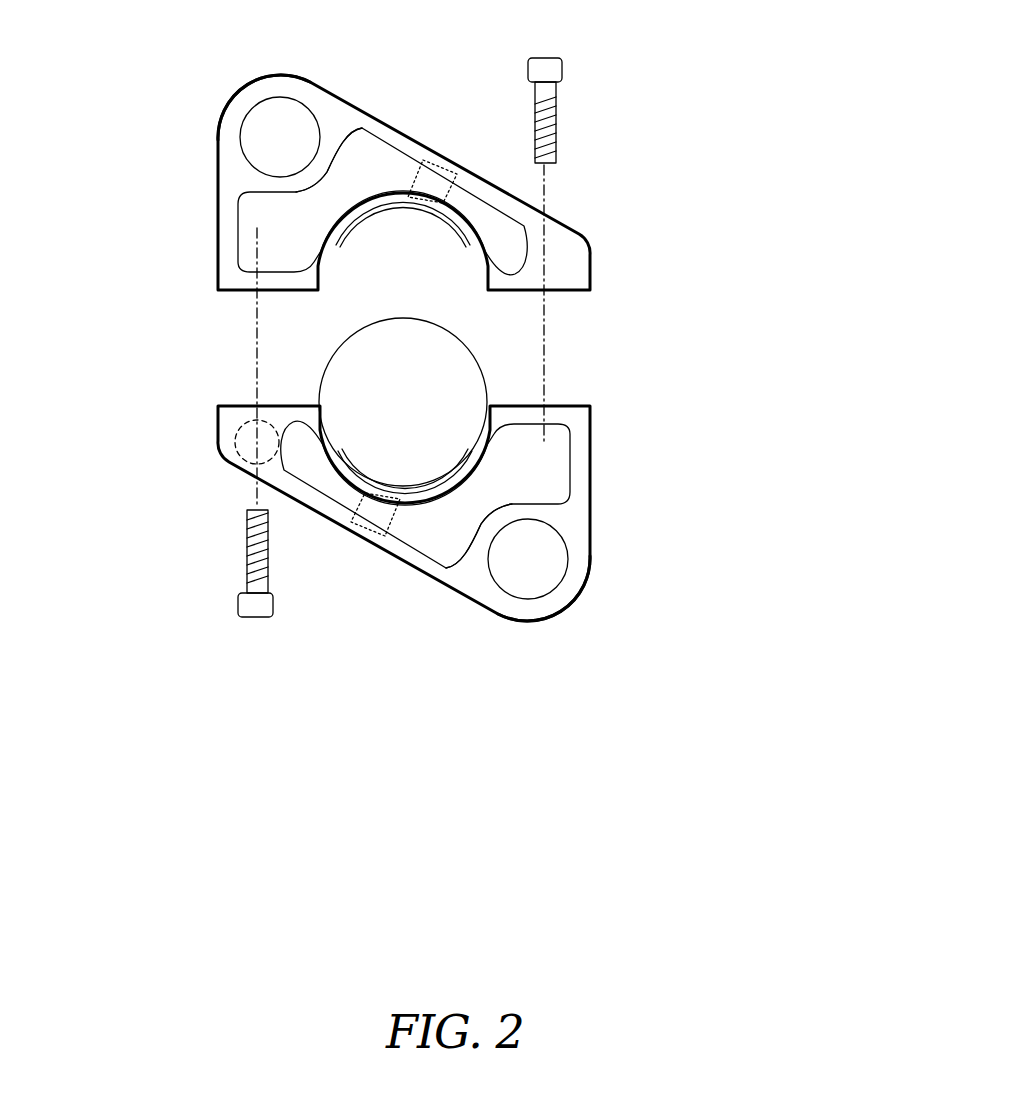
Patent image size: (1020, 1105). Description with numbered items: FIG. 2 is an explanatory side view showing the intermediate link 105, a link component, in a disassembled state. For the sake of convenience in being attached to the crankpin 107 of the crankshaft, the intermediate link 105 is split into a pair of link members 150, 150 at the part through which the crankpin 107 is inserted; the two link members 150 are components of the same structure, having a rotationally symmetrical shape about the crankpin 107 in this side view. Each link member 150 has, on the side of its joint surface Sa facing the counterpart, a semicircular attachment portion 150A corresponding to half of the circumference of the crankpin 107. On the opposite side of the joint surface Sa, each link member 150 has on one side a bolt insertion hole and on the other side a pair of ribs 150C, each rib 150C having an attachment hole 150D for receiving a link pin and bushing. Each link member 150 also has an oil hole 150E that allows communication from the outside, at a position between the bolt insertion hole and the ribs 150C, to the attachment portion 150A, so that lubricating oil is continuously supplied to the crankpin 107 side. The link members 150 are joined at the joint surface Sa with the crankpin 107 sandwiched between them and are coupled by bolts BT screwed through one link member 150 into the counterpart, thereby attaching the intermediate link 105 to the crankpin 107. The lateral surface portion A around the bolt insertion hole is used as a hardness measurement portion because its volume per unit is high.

The intermediate link 105 is at (525, 348).
The link member 150 is at (590, 268).
The attachment portion 150A is at (343, 233).
The rib 150C is at (276, 80).
The attachment hole 150D is at (240, 134).
The oil hole 150E is at (458, 192).
The joint surface Sa is at (283, 291).
The portion A is at (218, 447).
The crankpin 107 is at (323, 383).
The bolt BT is at (556, 113).